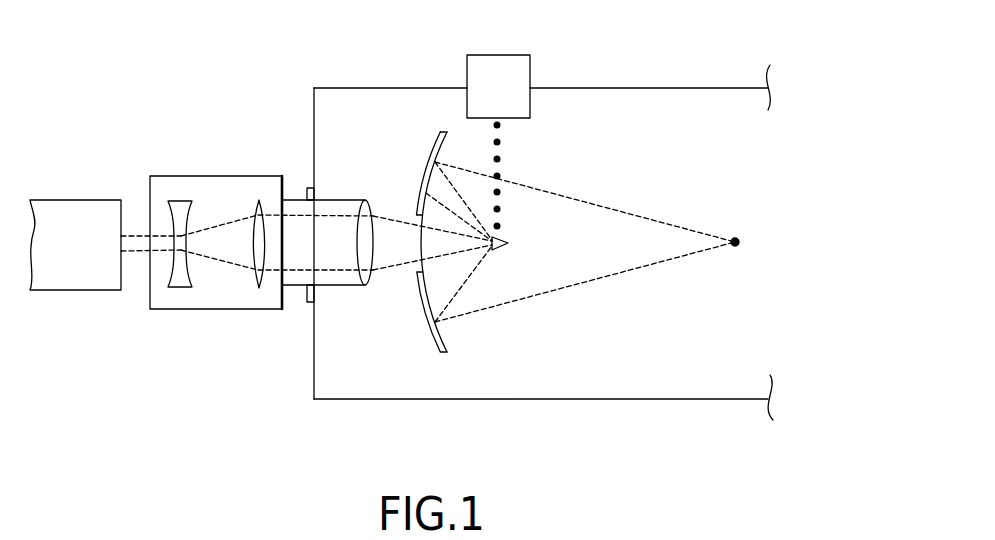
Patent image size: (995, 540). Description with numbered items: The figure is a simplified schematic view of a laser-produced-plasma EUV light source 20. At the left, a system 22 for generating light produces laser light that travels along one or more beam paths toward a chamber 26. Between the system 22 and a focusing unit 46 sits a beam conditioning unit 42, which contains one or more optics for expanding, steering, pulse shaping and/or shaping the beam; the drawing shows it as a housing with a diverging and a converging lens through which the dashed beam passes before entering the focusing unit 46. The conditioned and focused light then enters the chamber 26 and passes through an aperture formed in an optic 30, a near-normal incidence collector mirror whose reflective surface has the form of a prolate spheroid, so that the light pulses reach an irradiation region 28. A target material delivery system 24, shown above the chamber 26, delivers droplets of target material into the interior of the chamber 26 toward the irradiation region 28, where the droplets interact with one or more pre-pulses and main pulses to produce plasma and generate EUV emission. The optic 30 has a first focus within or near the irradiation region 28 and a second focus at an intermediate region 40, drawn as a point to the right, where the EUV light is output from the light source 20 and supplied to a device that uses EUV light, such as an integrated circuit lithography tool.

The laser-produced-plasma EUV light source 20 is at (235, 91).
The system for generating light 22 is at (90, 250).
The target material delivery system 24 is at (514, 94).
The chamber 26 is at (618, 371).
The irradiation region 28 is at (509, 243).
The optic 30 is at (426, 317).
The intermediate region 40 is at (738, 246).
The beam conditioning unit 42 is at (217, 310).
The focusing unit 46 is at (372, 200).